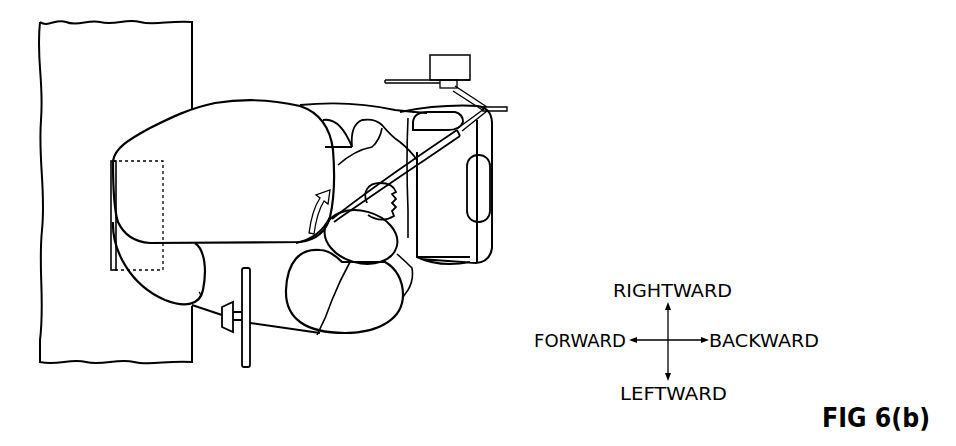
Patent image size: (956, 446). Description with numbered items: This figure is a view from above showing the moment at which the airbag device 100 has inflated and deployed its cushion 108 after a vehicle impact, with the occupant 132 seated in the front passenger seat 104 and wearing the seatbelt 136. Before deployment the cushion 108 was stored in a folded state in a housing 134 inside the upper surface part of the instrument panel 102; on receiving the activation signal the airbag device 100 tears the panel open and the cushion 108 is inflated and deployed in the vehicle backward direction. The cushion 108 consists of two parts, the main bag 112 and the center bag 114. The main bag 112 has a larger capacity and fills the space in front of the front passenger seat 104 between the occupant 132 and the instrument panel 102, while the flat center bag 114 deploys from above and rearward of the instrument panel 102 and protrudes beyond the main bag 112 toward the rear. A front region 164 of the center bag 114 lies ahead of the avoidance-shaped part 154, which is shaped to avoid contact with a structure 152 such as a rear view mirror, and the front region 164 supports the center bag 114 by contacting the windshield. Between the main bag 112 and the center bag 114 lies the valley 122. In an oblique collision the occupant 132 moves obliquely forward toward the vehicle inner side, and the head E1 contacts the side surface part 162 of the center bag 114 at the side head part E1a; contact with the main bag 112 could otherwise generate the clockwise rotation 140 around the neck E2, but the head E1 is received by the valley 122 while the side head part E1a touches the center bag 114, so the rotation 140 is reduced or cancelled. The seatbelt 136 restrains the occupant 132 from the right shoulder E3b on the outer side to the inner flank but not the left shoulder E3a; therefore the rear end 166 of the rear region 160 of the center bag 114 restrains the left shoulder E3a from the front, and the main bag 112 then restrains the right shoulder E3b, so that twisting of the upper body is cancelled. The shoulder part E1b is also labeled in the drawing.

The airbag device 100 is at (106, 153).
The instrument panel 102 is at (178, 40).
The front passenger seat 104 is at (482, 143).
The cushion 108 is at (303, 104).
The main bag 112 is at (207, 127).
The center bag 114 is at (347, 317).
The valley 122 is at (303, 240).
The occupant 132 is at (411, 268).
The housing 134 is at (110, 260).
The seatbelt 136 is at (408, 148).
The rotation 140 is at (307, 213).
The structure 152 is at (245, 367).
The avoidance-shaped part 154 is at (260, 328).
The rear region 160 is at (404, 302).
The side surface part 162 is at (396, 295).
The front region 164 is at (192, 307).
The rear end 166 is at (408, 282).
The head E1 is at (395, 228).
The side head part E1a is at (317, 336).
The occupant shoulder E1b is at (405, 277).
The neck E2 is at (383, 203).
The left shoulder E3a is at (412, 273).
The right shoulder E3b is at (390, 143).